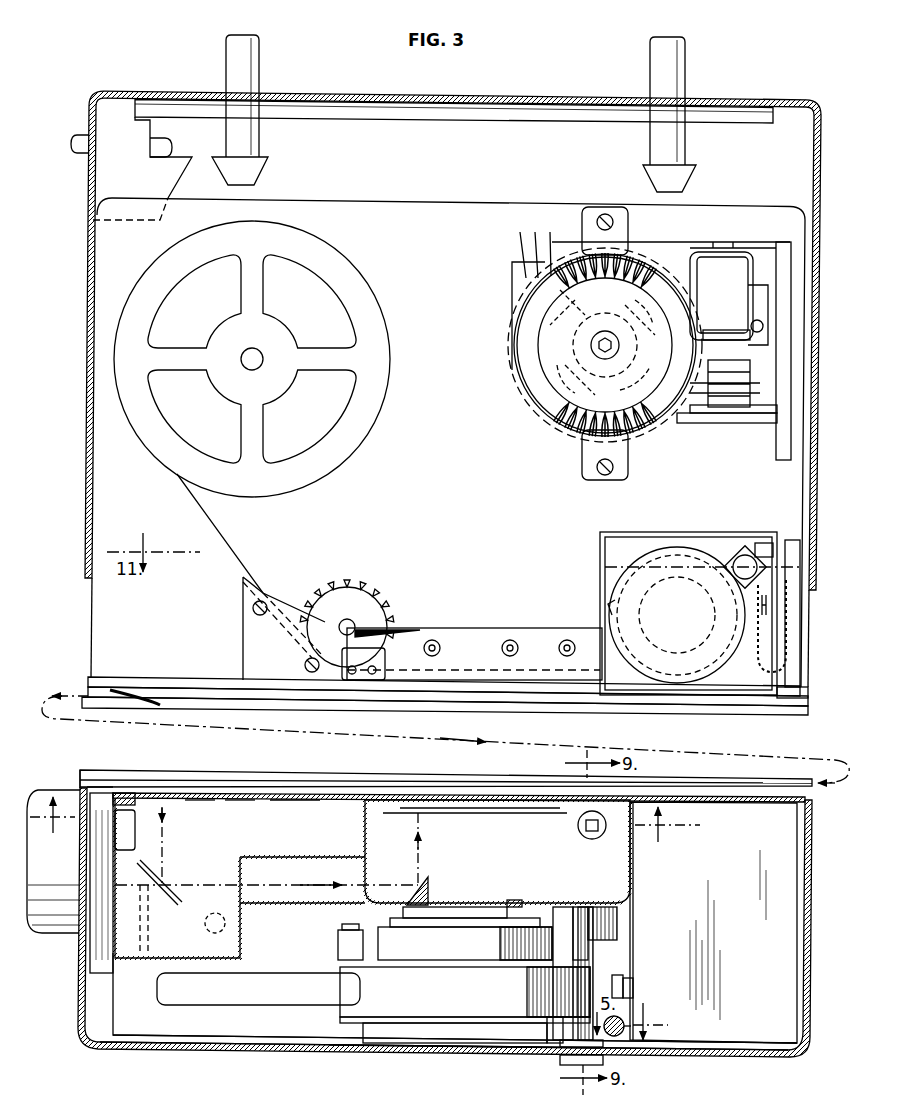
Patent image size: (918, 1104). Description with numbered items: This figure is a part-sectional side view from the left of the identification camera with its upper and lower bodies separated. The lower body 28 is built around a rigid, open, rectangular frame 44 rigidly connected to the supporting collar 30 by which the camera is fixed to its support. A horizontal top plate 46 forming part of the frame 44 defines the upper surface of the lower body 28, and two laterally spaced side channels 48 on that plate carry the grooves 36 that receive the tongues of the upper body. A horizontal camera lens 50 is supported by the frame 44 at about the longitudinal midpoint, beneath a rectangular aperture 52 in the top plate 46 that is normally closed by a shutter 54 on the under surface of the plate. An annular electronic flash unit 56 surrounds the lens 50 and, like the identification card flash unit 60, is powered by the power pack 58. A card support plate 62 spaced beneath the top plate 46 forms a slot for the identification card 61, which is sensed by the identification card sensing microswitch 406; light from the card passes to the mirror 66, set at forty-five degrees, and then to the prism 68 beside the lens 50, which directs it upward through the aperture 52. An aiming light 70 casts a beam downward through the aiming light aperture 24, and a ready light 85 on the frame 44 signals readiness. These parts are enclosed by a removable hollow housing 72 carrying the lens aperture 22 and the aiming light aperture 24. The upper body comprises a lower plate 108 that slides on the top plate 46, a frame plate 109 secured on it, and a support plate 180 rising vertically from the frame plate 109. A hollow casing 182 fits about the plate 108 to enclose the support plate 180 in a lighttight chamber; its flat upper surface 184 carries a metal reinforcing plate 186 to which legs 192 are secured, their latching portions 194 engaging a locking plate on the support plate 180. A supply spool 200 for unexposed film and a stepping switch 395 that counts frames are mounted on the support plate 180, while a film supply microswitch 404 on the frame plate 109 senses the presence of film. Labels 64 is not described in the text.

The casing 182 is at (803, 97).
The upper surface 184 is at (567, 102).
The metal reinforcing plate 186 is at (375, 120).
The support plate 180 is at (447, 215).
The legs 192 is at (226, 68).
The latching portions 194 is at (266, 168).
The supply spool 200 is at (375, 385).
The stepping switch 395 is at (510, 400).
The film supply microswitch 404 is at (365, 682).
The frame plate 109 is at (160, 682).
The lower plate 108 is at (86, 694).
The lower body 28 is at (232, 1058).
The top plate 46 is at (178, 790).
The side channels 48 is at (80, 778).
The supporting collar 30 is at (72, 935).
The frame 44 is at (105, 946).
The identification card sensing microswitch 406 is at (122, 838).
The identification card flash unit 60 is at (224, 920).
The mirror 66 is at (168, 900).
The plate layer 64 is at (198, 803).
The identification card 61 is at (243, 802).
The card support plate 62 is at (300, 800).
The grooves 36 is at (535, 805).
The aperture 52 is at (422, 795).
The shutter 54 is at (524, 814).
The prism 68 is at (430, 884).
The camera lens 50 is at (497, 973).
The annular electronic flash unit 56 is at (375, 975).
The aiming light 70 is at (337, 946).
The power pack 58 is at (772, 1040).
The ready light 85 is at (628, 976).
The housing 72 is at (700, 1058).
The aiming light aperture 24 is at (335, 1050).
The lens aperture 22 is at (462, 1054).